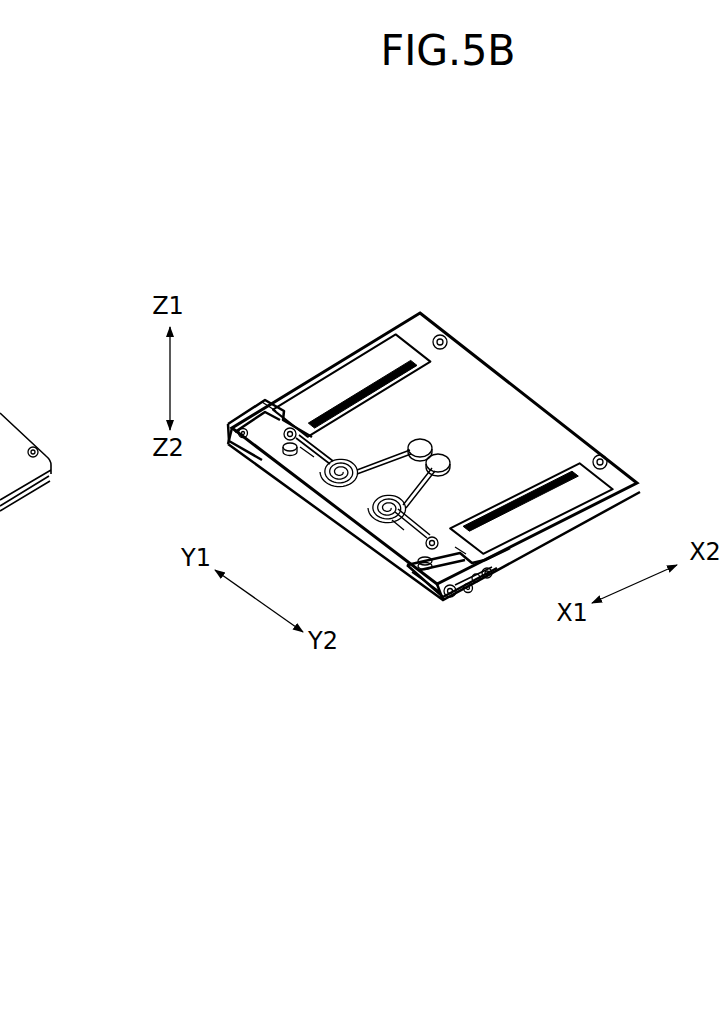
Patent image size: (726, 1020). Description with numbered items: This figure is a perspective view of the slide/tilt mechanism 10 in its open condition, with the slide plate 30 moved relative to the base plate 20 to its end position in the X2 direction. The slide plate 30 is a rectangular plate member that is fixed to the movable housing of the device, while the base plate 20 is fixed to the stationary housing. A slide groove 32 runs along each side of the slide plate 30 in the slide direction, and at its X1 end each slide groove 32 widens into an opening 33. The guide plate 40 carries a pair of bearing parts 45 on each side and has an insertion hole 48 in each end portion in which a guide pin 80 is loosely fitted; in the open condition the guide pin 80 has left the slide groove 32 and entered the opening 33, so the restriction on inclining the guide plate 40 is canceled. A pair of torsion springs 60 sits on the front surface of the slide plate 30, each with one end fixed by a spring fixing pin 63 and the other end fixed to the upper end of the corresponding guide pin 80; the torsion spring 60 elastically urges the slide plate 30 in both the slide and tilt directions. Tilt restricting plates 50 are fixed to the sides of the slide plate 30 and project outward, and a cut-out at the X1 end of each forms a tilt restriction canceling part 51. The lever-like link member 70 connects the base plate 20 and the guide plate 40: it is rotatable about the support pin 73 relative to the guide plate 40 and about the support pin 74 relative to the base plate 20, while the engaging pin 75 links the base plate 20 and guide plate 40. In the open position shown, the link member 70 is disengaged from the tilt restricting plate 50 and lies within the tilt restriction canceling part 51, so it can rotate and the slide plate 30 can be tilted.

The slide/tilt mechanism 10 is at (477, 328).
The base plate 20 is at (437, 598).
The slide plate 30 is at (494, 404).
The slide groove 32 is at (403, 378).
The opening 33 is at (303, 462).
The guide plate 40 is at (288, 463).
The bearing part 45 is at (465, 590).
The insertion hole 48 is at (283, 452).
The tilt restricting plate 50 is at (338, 374).
The tilt restriction canceling part 51 is at (262, 400).
The torsion spring 60 is at (331, 500).
The spring fixing pin 63 is at (437, 454).
The link member 70 is at (250, 412).
The support pin 73 is at (487, 585).
The support pin 74 is at (492, 574).
The engaging pin 75 is at (243, 420).
The guide pin 80 is at (297, 426).